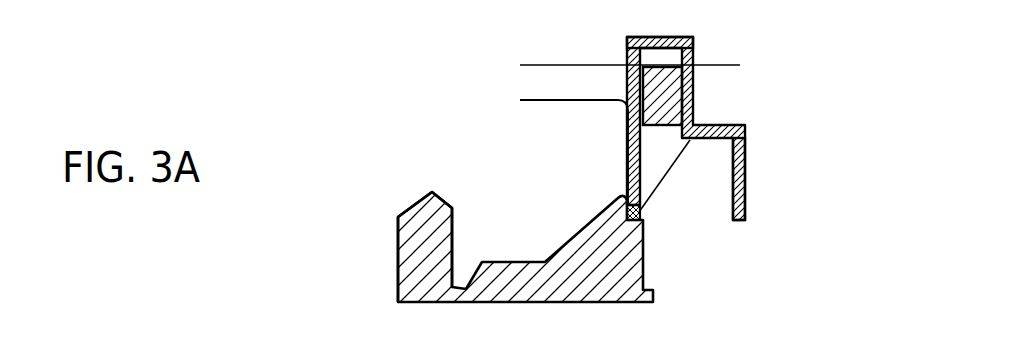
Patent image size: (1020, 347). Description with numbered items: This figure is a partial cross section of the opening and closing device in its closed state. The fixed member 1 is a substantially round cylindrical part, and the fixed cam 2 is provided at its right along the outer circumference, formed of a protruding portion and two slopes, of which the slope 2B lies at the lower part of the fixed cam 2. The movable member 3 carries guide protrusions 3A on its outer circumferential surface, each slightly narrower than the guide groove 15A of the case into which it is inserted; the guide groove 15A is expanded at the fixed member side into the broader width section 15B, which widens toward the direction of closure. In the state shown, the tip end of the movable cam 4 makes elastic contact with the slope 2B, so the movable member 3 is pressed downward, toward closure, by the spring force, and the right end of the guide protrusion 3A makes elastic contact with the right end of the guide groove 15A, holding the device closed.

The fixed member 1 is at (418, 270).
The fixed cam 2 is at (618, 267).
The slope 2B is at (642, 218).
The movable member 3 is at (715, 82).
The guide protrusion 3A is at (695, 102).
The movable cam 4 is at (650, 163).
The guide groove 15A is at (668, 53).
The broader width section 15B is at (710, 163).